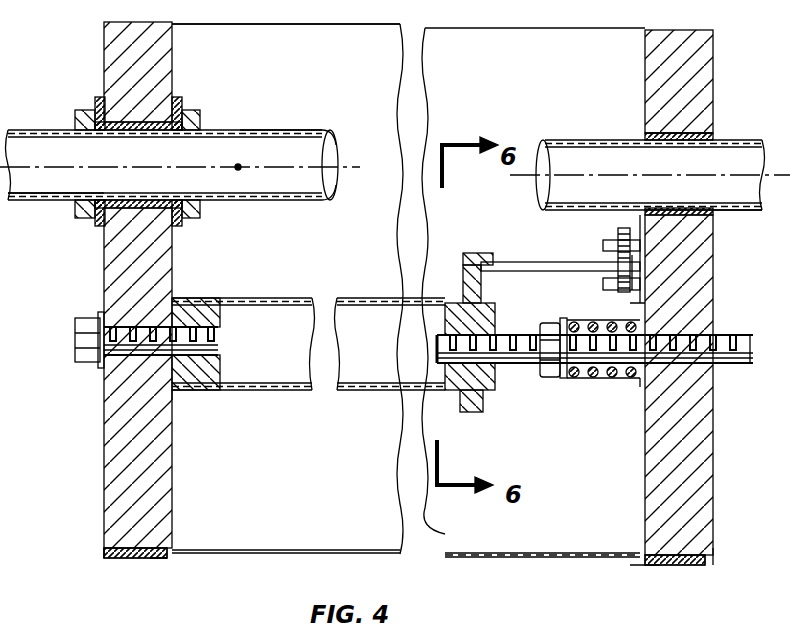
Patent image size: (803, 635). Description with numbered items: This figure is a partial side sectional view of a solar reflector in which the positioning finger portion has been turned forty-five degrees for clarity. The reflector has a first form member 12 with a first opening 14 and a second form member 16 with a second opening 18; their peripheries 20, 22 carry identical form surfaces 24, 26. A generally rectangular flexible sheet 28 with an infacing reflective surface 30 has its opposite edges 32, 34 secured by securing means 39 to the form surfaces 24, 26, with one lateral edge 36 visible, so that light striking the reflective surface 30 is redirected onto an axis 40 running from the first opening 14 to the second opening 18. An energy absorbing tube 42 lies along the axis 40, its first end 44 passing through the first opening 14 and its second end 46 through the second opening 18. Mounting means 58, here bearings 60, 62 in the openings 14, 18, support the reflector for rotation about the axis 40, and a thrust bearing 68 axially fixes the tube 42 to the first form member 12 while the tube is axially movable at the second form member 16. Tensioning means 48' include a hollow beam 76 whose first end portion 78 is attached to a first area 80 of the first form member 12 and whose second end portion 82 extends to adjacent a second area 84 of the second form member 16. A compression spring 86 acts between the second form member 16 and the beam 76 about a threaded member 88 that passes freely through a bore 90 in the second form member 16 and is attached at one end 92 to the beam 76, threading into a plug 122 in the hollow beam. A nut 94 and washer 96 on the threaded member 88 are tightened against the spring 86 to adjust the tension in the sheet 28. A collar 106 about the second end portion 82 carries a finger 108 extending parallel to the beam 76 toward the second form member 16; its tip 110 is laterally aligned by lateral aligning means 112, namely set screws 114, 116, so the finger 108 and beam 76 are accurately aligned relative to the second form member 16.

The first form member 12 is at (113, 472).
The first opening 14 is at (136, 210).
The second form member 16 is at (683, 438).
The second opening 18 is at (720, 210).
The periphery 20 is at (98, 551).
The periphery 22 is at (716, 559).
The form surface 24 is at (143, 560).
The form surface 26 is at (677, 567).
The flexible sheet 28 is at (512, 561).
The reflective surface 30 is at (300, 555).
The opposite edge 32 is at (125, 560).
The opposite edge 34 is at (695, 567).
The lateral edge 36 is at (503, 26).
The securing means 39 is at (150, 560).
The axis 40 is at (238, 164).
The energy absorbing tube 42 is at (302, 129).
The first end 44 is at (46, 130).
The second end 46 is at (735, 140).
The tensioning means 48' is at (532, 434).
The mounting means 58 is at (100, 206).
The bearing 60 is at (168, 226).
The bearing 62 is at (650, 136).
The thrust bearing 68 is at (100, 96).
The beam 76 is at (258, 298).
The first end portion 78 is at (200, 392).
The first area 80 is at (174, 400).
The second end portion 82 is at (444, 303).
The second area 84 is at (640, 387).
The compression spring 86 is at (573, 320).
The threaded member 88 is at (597, 375).
The bore 90 is at (685, 333).
The end 92 is at (433, 345).
The nut 94 is at (548, 325).
The washer 96 is at (562, 320).
The collar 106 is at (463, 413).
The finger 108 is at (520, 262).
The tip 110 is at (607, 257).
The lateral aligning means 112 is at (602, 222).
The set screw 114 is at (630, 295).
The set screw 116 is at (622, 230).
The plug 122 is at (442, 315).